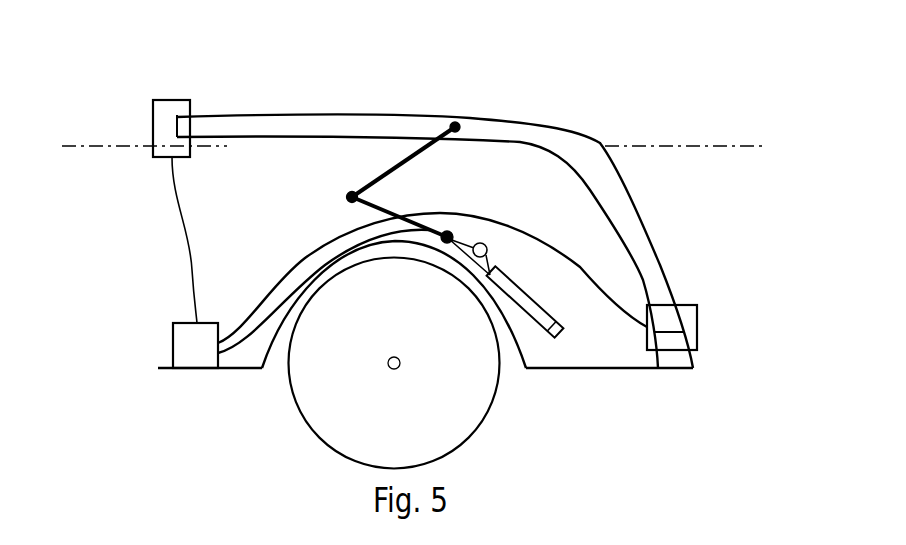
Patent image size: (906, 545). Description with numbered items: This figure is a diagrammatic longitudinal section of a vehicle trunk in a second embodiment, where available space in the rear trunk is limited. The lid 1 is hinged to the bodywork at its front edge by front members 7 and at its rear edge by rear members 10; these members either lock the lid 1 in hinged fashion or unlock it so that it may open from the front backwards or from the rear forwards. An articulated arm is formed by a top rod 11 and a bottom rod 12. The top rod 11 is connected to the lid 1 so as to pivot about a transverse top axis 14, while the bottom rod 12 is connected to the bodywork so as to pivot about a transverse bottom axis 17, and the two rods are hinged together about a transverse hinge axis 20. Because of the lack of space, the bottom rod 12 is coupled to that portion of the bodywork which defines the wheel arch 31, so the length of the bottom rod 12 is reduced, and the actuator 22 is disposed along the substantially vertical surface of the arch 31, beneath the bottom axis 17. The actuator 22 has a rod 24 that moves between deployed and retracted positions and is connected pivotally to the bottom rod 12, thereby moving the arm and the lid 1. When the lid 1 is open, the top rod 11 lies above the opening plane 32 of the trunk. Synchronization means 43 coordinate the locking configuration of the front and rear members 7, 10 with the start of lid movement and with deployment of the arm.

The lid 1 is at (569, 156).
The front members 7 is at (165, 120).
The rear members 10 is at (697, 326).
The top rod 11 is at (388, 172).
The bottom rod 12 is at (430, 228).
The top axis 14 is at (453, 122).
The bottom axis 17 is at (486, 244).
The hinge axis 20 is at (348, 196).
The actuator 22 is at (559, 306).
The rod 24 is at (453, 231).
The arch 31 is at (337, 262).
The opening plane 32 is at (90, 146).
The synchronization means 43 is at (193, 347).